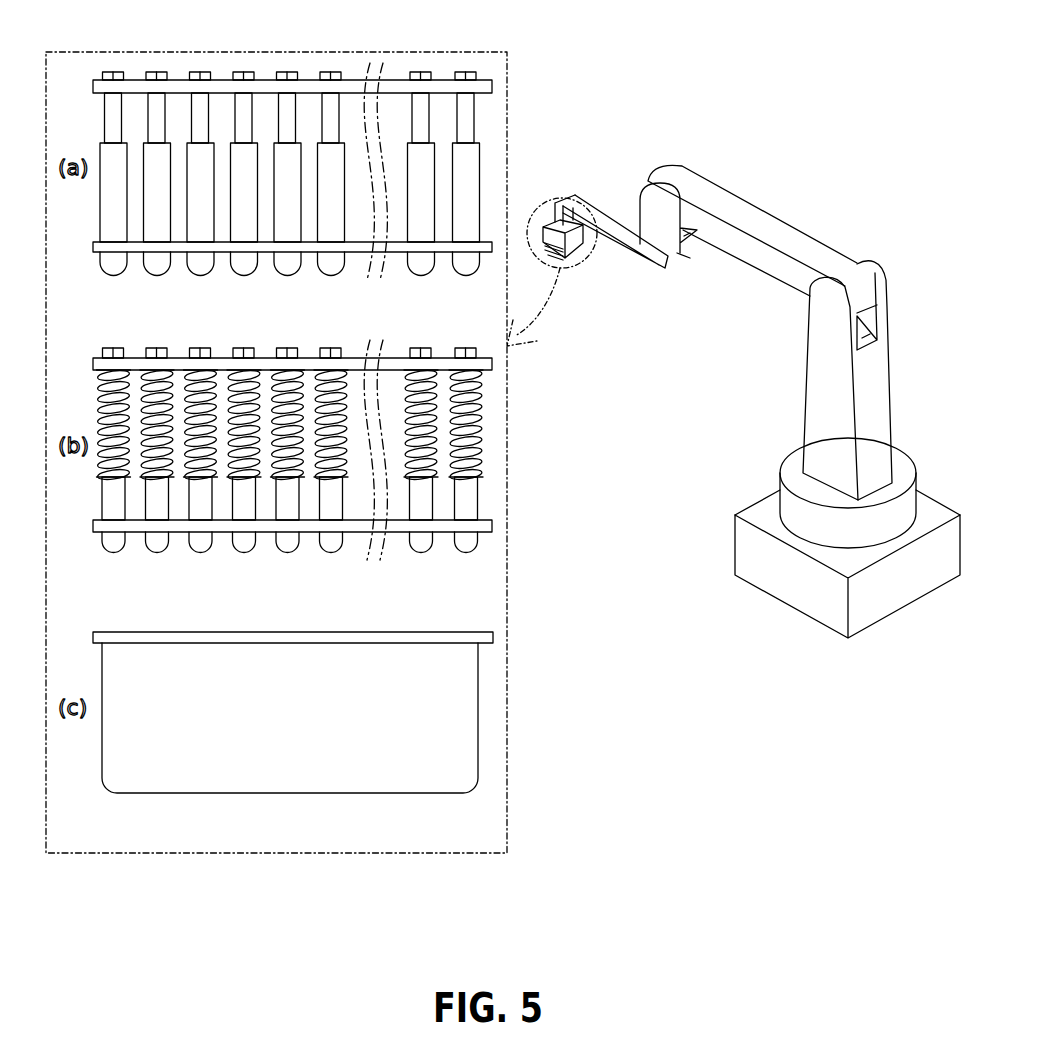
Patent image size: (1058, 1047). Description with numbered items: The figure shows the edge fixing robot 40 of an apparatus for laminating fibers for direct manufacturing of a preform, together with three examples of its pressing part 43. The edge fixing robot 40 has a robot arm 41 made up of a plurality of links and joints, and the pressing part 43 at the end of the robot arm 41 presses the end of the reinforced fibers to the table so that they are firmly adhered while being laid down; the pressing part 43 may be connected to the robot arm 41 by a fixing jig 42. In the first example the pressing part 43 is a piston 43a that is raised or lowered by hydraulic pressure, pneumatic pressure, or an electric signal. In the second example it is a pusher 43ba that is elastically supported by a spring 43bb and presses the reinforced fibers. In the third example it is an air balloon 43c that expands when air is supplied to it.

The edge fixing robot 40 is at (733, 375).
The robot arm 41 is at (752, 255).
The fixing jig 42 is at (614, 222).
The pressing part 43 is at (578, 232).
The piston 43a is at (470, 167).
The pusher 43ba is at (468, 500).
The spring 43bb is at (478, 390).
The air balloon 43c is at (463, 692).